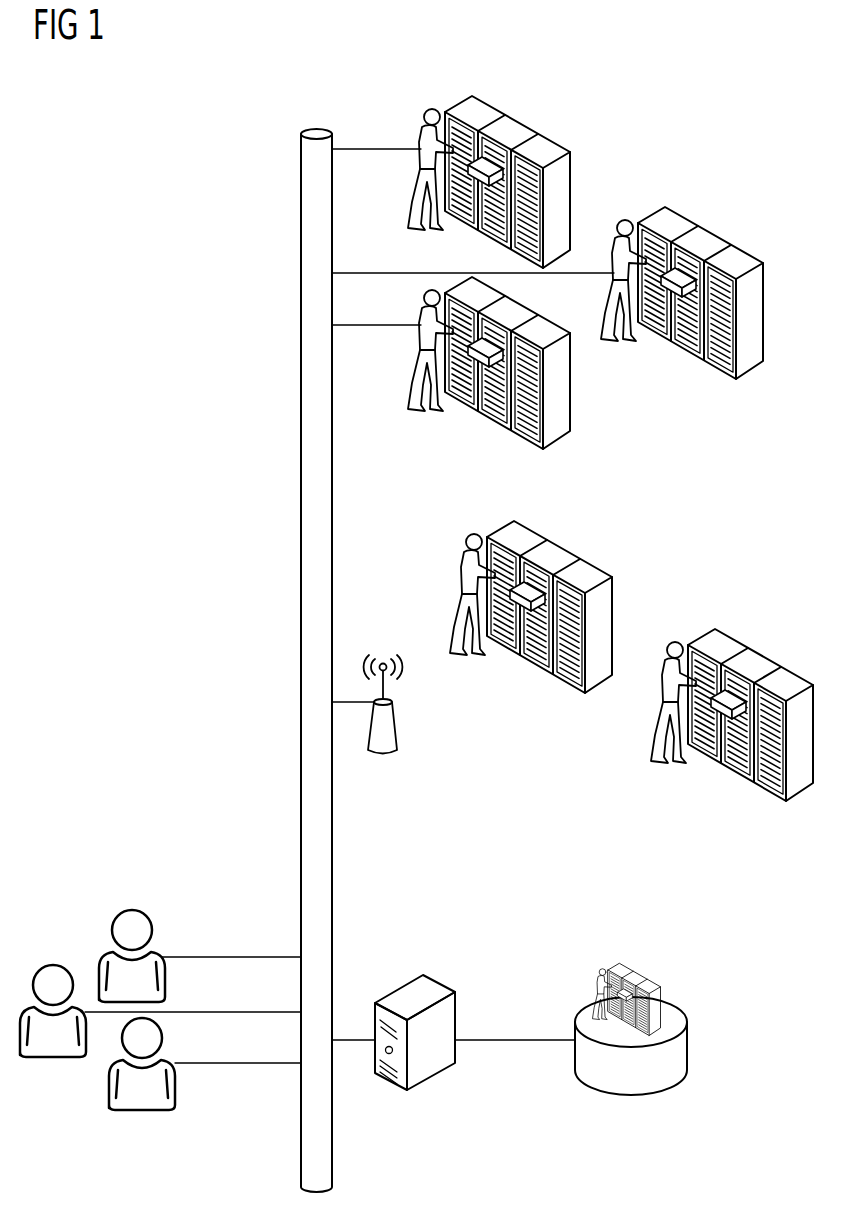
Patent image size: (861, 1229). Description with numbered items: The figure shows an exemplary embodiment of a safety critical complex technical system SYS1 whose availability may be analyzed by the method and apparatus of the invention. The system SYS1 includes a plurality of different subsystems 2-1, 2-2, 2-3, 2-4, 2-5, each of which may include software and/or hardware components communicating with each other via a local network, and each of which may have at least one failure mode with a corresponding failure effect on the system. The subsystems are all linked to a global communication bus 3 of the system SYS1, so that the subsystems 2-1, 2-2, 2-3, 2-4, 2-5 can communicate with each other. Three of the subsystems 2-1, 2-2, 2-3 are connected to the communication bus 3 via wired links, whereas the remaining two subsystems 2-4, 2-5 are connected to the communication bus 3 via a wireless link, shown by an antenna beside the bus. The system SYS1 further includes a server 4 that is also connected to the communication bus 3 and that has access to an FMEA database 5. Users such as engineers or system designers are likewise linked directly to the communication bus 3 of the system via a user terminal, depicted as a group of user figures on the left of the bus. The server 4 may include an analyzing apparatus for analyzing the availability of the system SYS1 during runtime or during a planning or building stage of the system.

The complex technical system SYS1 is at (686, 94).
The subsystem 2-1 is at (512, 132).
The subsystem 2-2 is at (558, 398).
The subsystem 2-3 is at (705, 246).
The subsystem 2-4 is at (552, 557).
The subsystem 2-5 is at (757, 667).
The communication bus 3 is at (332, 515).
The server 4 is at (433, 994).
The FMEA database 5 is at (687, 1047).